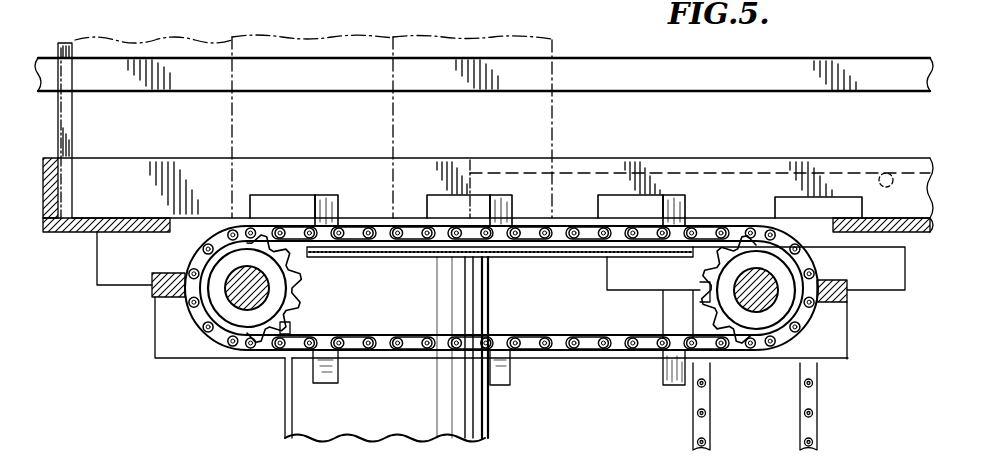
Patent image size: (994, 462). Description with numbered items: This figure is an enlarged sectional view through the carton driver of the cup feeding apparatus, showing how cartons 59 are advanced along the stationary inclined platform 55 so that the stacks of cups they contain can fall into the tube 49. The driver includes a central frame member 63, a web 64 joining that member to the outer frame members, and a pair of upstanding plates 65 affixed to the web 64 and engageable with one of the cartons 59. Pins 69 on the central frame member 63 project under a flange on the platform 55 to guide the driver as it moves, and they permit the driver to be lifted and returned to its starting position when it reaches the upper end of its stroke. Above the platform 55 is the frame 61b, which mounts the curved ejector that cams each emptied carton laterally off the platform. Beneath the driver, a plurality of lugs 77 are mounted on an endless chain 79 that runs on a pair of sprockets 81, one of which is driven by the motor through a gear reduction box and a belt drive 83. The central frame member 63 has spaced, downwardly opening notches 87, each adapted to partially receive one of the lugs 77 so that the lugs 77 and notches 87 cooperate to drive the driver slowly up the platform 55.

The tube 49 is at (466, 410).
The platform 55 is at (83, 233).
The cartons 59 is at (352, 44).
The frame 61b is at (626, 36).
The central frame member 63 is at (297, 167).
The web 64 is at (39, 214).
The upstanding plates 65 is at (65, 110).
The pins 69 is at (890, 172).
The lugs 77 is at (330, 196).
The endless chain 79 is at (379, 245).
The sprockets 81 is at (295, 312).
The belt drive 83 is at (807, 397).
The notches 87 is at (275, 201).